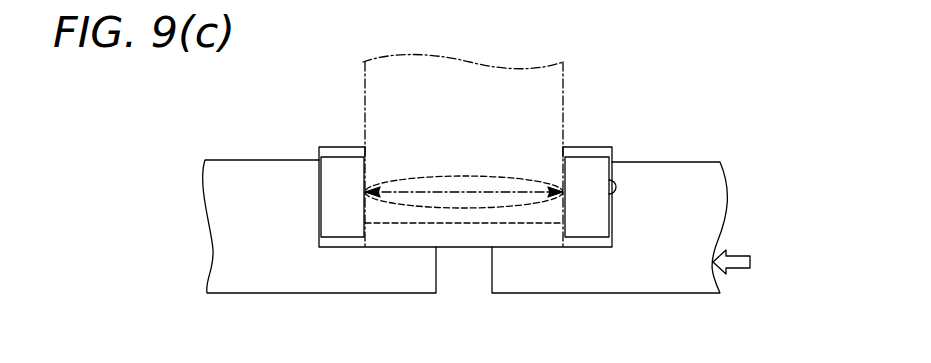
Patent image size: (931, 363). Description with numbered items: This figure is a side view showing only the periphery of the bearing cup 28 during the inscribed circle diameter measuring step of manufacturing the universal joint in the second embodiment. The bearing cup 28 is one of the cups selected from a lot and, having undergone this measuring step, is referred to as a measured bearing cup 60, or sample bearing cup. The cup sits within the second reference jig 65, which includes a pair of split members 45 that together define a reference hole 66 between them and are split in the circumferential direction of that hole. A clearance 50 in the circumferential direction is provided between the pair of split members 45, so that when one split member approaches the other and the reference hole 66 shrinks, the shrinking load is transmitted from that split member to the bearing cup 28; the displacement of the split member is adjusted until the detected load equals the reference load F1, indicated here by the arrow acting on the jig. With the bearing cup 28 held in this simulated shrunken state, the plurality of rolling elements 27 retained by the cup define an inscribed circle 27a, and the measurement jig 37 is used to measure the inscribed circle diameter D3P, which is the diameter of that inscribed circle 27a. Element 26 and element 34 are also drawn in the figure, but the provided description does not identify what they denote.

The base member 26 is at (527, 247).
The rolling elements 27 is at (342, 168).
The inscribed circle 27a is at (502, 175).
The bearing cup 28 is at (500, 201).
The measured bearing cup 60 is at (612, 218).
The optical axis 34 is at (473, 152).
The measurement jig 37 is at (563, 70).
The split member 45 is at (262, 160).
The clearance 50 is at (436, 266).
The second reference jig 65 is at (727, 190).
The reference hole 66 is at (690, 195).
The inscribed circle diameter D3P is at (440, 192).
The reference load F1 is at (740, 275).